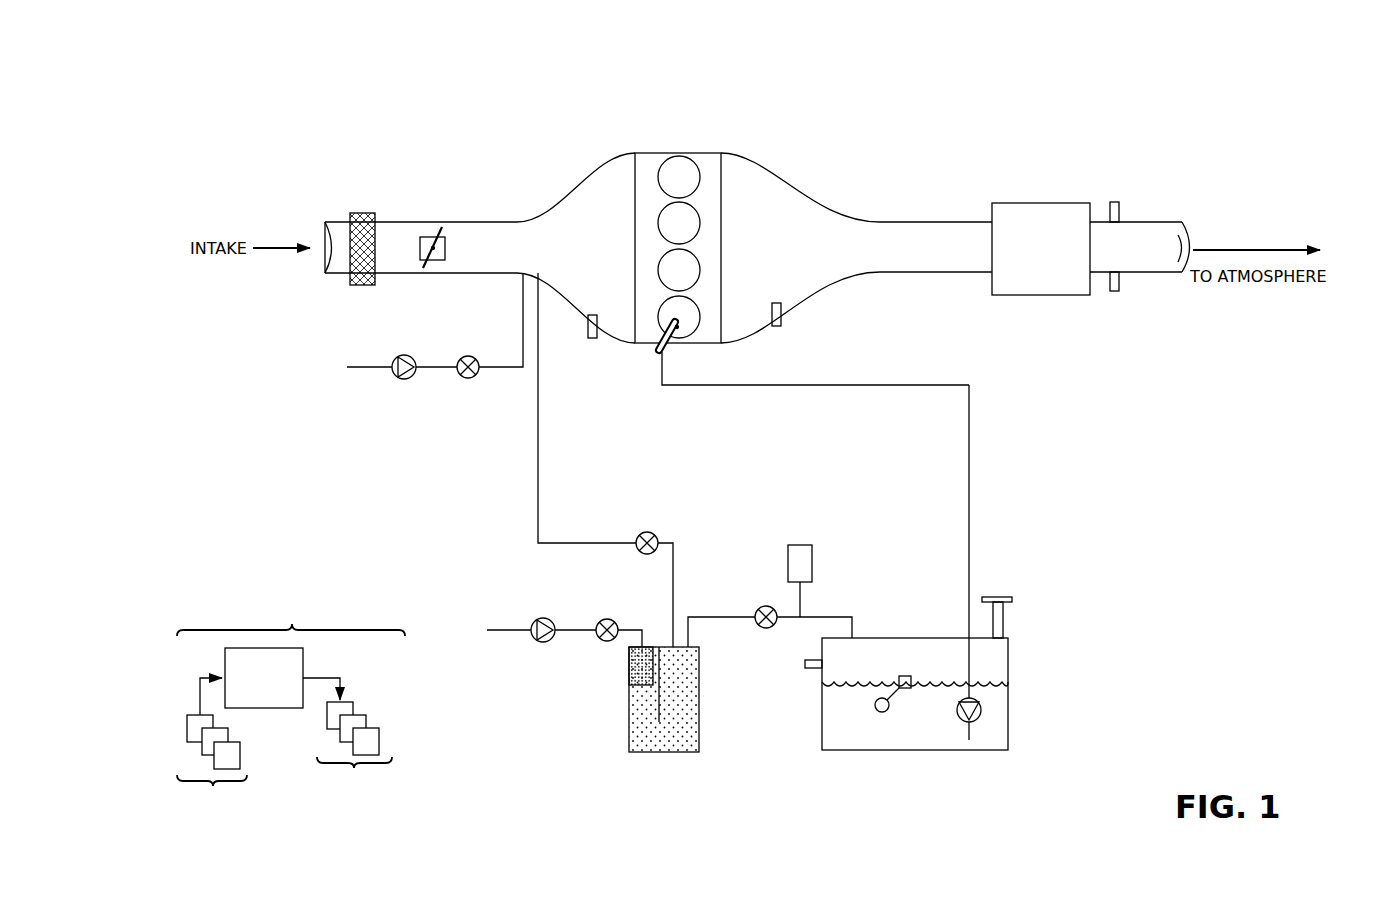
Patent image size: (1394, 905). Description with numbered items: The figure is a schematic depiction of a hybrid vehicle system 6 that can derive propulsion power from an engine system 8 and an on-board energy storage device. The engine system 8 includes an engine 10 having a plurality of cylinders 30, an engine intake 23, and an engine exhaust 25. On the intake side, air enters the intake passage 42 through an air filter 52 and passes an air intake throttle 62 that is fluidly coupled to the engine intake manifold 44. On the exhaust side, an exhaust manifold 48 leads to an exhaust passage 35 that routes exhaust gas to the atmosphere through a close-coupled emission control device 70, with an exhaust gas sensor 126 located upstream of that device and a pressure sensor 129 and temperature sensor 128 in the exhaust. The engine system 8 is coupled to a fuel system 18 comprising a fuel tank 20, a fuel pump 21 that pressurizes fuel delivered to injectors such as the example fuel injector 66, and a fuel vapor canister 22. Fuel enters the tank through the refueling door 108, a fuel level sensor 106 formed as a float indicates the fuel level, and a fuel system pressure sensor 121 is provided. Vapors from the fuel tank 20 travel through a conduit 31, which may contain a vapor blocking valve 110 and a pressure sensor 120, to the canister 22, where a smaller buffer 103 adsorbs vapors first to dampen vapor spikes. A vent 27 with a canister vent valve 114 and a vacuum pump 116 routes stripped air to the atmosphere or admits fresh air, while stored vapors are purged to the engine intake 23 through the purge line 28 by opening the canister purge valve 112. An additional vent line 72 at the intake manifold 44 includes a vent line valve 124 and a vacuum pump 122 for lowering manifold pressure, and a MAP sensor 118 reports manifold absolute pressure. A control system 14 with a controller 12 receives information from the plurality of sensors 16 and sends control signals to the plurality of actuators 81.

The hybrid vehicle system 6 is at (228, 133).
The engine system 8 is at (1210, 128).
The engine 10 is at (692, 248).
The controller 12 is at (264, 678).
The control system 14 is at (291, 703).
The sensors 16 is at (212, 751).
The fuel system 18 is at (954, 567).
The fuel tank 20 is at (880, 638).
The fuel pump 21 is at (981, 713).
The fuel vapor canister 22 is at (668, 695).
The engine intake 23 is at (472, 245).
The engine exhaust 25 is at (826, 182).
The vent 27 is at (508, 630).
The purge line 28 is at (538, 395).
The cylinders 30 is at (693, 183).
The conduit 31 is at (812, 617).
The exhaust passage 35 is at (1160, 222).
The intake passage 42 is at (337, 275).
The engine intake manifold 44 is at (591, 247).
The exhaust manifold 48 is at (782, 247).
The air filter 52 is at (362, 213).
The air intake throttle 62 is at (443, 247).
The fuel injector 66 is at (671, 343).
The emission control device 70 is at (1032, 192).
The vent line 72 is at (370, 367).
The actuators 81 is at (347, 744).
The buffer 103 is at (629, 668).
The fuel level sensor 106 is at (908, 676).
The refueling door 108 is at (998, 597).
The vapor blocking valve 110 is at (764, 606).
The canister purge valve 112 is at (647, 532).
The canister vent valve 114 is at (607, 619).
The vacuum pump 116 is at (543, 618).
The MAP sensor 118 is at (588, 318).
The pressure sensor 120 is at (812, 552).
The fuel system pressure sensor 121 is at (805, 669).
The vacuum pump 122 is at (405, 355).
The vent line valve 124 is at (469, 356).
The exhaust gas sensor 126 is at (781, 306).
The temperature sensor 128 is at (1114, 291).
The pressure sensor 129 is at (1114, 202).